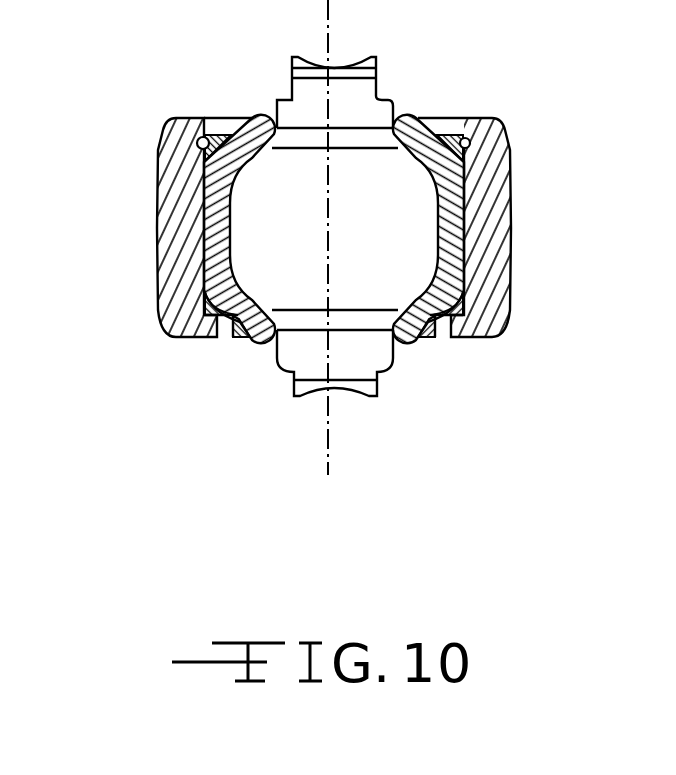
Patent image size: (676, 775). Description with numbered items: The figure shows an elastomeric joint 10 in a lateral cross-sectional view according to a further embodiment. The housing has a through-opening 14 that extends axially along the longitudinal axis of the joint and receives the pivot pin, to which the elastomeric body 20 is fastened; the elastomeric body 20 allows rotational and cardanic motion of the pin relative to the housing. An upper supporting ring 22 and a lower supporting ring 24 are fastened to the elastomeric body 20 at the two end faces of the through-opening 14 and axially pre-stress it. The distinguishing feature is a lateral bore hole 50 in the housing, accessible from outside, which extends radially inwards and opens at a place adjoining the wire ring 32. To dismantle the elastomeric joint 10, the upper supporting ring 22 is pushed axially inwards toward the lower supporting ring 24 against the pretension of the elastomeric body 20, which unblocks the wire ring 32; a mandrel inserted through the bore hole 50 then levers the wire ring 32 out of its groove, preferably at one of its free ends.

The elastomeric joint 10 is at (210, 58).
The through-opening 14 is at (448, 127).
The elastomeric body 20 is at (203, 235).
The upper supporting ring 22 is at (199, 151).
The lower supporting ring 24 is at (178, 316).
The wire ring 32 is at (467, 138).
The bore hole 50 is at (505, 145).